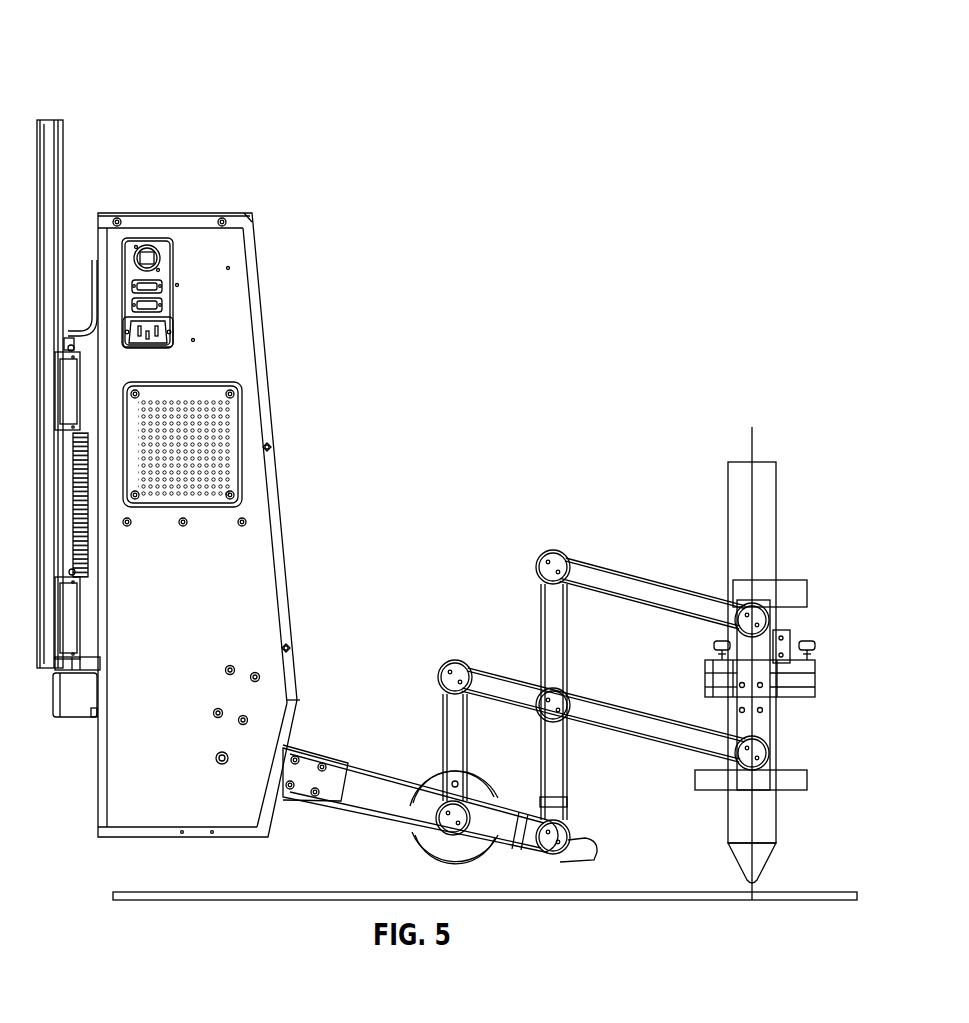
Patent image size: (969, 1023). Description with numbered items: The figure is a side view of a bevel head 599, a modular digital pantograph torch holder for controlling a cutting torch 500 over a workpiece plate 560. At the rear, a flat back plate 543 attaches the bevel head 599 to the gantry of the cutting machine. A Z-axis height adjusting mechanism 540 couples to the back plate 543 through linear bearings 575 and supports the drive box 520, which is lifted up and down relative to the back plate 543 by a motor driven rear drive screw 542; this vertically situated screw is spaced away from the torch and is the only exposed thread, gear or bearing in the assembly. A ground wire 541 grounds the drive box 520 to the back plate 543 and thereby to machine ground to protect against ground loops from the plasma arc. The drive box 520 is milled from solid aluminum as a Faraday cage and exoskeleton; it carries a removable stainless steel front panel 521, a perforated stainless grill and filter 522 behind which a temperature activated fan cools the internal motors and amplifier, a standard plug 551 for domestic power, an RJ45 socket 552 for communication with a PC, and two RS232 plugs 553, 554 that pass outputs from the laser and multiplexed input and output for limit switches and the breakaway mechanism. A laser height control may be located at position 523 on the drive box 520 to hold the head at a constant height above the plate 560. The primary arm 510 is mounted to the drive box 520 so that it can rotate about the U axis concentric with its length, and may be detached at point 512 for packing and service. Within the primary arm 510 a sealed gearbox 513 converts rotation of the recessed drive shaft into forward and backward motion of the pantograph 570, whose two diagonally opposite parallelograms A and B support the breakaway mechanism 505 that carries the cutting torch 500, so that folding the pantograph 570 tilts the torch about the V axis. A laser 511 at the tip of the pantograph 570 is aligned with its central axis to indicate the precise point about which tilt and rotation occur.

The bevel head 599 is at (714, 66).
The linear bearings 575 is at (62, 122).
The back plate 543 is at (43, 158).
The ground wire 541 is at (78, 330).
The rear drive screw 542 is at (92, 507).
The Z-axis height adjusting mechanism 540 is at (73, 636).
The drive box 520 is at (240, 593).
The front panel 521 is at (222, 212).
The position for laser height control 523 is at (145, 838).
The perforated stainless grill and filter 522 is at (218, 448).
The standard plug 551 is at (172, 333).
The RJ45 socket 552 is at (148, 258).
The RS232 plug 553 is at (162, 287).
The RS232 plug 554 is at (162, 303).
The pantograph 570 is at (546, 512).
The detachment point 512 is at (305, 762).
The primary arm 510 is at (372, 800).
The gearbox 513 is at (428, 776).
The laser 511 is at (595, 848).
The cutting torch 500 is at (738, 478).
The breakaway mechanism 505 is at (802, 640).
The plate 560 is at (147, 892).